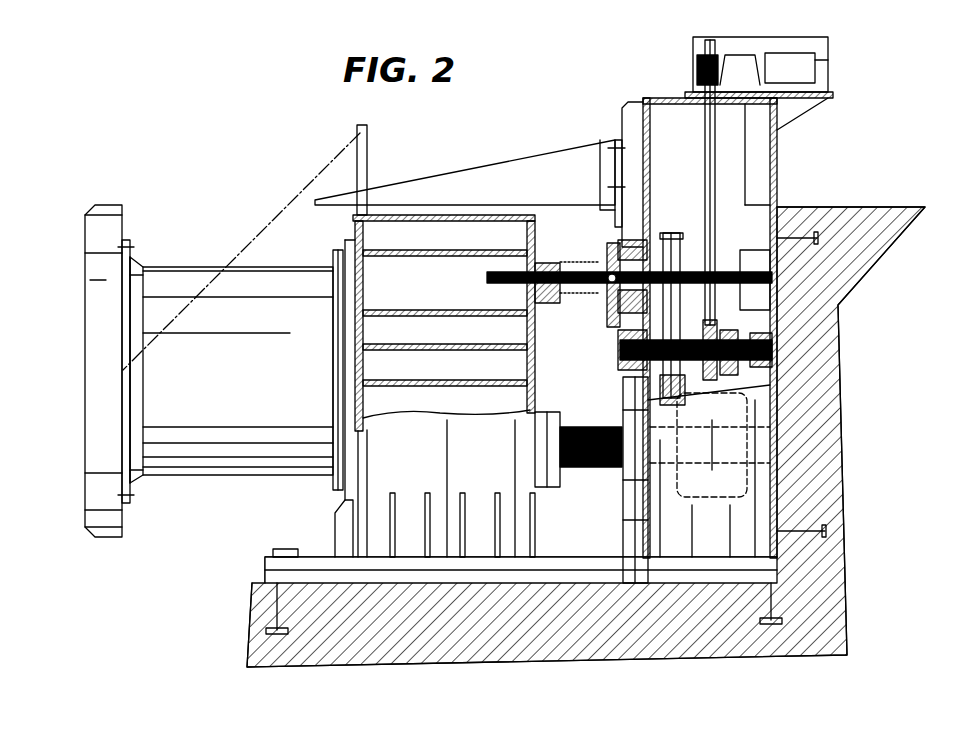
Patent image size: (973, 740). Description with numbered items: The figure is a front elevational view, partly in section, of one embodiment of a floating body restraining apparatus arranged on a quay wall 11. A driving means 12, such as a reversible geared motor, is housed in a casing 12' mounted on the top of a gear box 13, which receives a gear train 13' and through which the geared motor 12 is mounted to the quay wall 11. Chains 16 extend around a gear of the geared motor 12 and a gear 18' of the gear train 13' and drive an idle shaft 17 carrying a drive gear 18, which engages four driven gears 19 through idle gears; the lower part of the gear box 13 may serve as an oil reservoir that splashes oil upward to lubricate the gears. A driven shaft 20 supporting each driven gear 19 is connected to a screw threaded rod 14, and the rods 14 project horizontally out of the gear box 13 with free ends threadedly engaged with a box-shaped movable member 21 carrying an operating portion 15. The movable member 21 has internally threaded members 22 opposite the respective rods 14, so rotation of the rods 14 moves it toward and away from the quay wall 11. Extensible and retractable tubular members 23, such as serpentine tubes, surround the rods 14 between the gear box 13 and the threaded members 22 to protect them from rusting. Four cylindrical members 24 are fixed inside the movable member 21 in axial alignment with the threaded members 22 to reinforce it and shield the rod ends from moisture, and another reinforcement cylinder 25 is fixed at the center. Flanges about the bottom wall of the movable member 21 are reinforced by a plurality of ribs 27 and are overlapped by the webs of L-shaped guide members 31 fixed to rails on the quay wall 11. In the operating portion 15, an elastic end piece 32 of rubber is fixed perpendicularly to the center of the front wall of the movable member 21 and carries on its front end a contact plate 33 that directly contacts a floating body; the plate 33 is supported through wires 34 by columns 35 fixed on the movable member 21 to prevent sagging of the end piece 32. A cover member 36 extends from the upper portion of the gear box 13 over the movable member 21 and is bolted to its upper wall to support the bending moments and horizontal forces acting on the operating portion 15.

The quay wall 11 is at (810, 262).
The driving means 12 is at (759, 54).
The casing 12' is at (841, 63).
The gear box 13 is at (725, 340).
The gear train 13' is at (748, 348).
The screw threaded rod 14 is at (593, 265).
The operating portion 15 is at (312, 244).
The chains 16 is at (708, 178).
The idle shaft 17 is at (707, 325).
The drive gear 18 is at (709, 462).
The gear 18' is at (797, 334).
The driven gear 19 is at (671, 233).
The driven shaft 20 is at (735, 280).
The movable member 21 is at (535, 363).
The internally threaded member 22 is at (552, 263).
The extensible and retractable tubular member 23 is at (590, 296).
The cylindrical member 24 is at (437, 265).
The reinforcement cylinder 25 is at (432, 355).
The rib 27 is at (365, 515).
The guide member 31 is at (268, 563).
The elastic end piece 32 is at (236, 450).
The contact plate 33 is at (98, 398).
The wire 34 is at (243, 250).
The column 35 is at (368, 148).
The cover member 36 is at (476, 175).